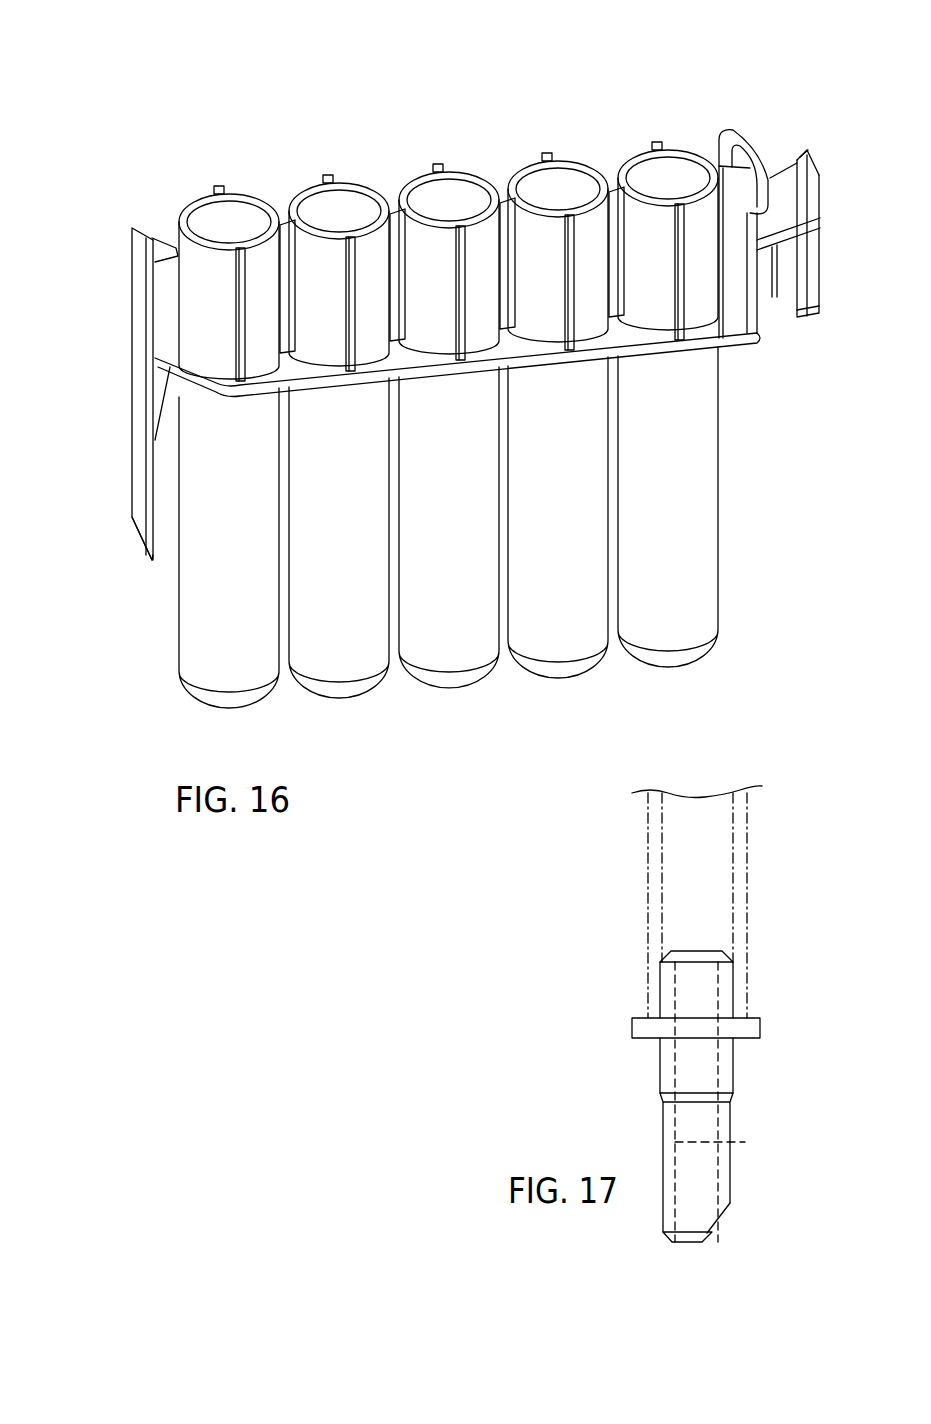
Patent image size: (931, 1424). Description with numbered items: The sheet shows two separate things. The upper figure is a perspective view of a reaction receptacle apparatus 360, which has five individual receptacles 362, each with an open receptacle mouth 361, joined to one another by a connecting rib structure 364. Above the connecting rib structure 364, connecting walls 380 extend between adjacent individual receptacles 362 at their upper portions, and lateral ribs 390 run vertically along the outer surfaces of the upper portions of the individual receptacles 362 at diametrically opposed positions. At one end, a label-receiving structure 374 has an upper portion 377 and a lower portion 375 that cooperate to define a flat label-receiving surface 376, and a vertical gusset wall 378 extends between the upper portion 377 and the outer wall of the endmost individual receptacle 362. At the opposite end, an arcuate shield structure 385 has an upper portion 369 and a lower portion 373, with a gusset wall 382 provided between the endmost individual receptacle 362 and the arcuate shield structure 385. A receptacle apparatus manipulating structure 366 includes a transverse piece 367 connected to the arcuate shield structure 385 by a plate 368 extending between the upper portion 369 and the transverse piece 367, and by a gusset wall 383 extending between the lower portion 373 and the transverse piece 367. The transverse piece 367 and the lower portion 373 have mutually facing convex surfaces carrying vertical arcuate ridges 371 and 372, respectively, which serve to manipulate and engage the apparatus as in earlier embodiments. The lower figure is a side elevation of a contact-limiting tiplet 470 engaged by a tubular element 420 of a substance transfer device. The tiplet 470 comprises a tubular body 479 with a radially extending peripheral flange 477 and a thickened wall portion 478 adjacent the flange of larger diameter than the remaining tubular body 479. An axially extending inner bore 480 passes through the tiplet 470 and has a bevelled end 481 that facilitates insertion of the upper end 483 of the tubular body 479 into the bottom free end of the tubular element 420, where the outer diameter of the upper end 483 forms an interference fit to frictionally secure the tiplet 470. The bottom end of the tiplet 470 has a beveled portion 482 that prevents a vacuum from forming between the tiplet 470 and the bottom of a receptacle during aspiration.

In FIG. 16, the reaction receptacle apparatus 360 is at (717, 66).
In FIG. 16, the open receptacle mouth 361 is at (200, 217).
In FIG. 16, the individual receptacle 362 is at (272, 692).
In FIG. 16, the connecting rib structure 364 is at (723, 347).
In FIG. 16, the receptacle apparatus manipulating structure 366 is at (818, 152).
In FIG. 16, the transverse piece 367 is at (817, 278).
In FIG. 16, the plate 368 is at (790, 167).
In FIG. 16, the upper portion of arcuate shield structure 369 is at (730, 147).
In FIG. 16, the vertical arcuate ridge 371 is at (799, 308).
In FIG. 16, the vertical arcuate ridge 372 is at (777, 290).
In FIG. 16, the lower portion of arcuate shield structure 373 is at (763, 307).
In FIG. 16, the label-receiving structure 374 is at (127, 413).
In FIG. 16, the lower portion of label-receiving structure 375 is at (150, 563).
In FIG. 16, the flat label-receiving surface 376 is at (135, 523).
In FIG. 16, the upper portion of label-receiving structure 377 is at (138, 288).
In FIG. 16, the vertical gusset wall 378 is at (160, 252).
In FIG. 16, the connecting wall 380 is at (217, 188).
In FIG. 16, the gusset wall 382 is at (730, 170).
In FIG. 16, the gusset wall 383 is at (798, 238).
In FIG. 16, the arcuate shield structure 385 is at (755, 138).
In FIG. 16, the lateral rib 390 is at (222, 197).
In FIG. 17, the tubular element 420 is at (753, 862).
In FIG. 17, the tiplet 470 is at (768, 1021).
In FIG. 17, the peripheral flange 477 is at (632, 1032).
In FIG. 17, the thickened wall portion 478 is at (660, 1066).
In FIG. 17, the tubular body 479 is at (738, 1075).
In FIG. 17, the inner bore 480 is at (745, 1142).
In FIG. 17, the bevelled end 481 is at (670, 953).
In FIG. 17, the beveled portion 482 is at (707, 1233).
In FIG. 17, the upper end 483 is at (660, 990).